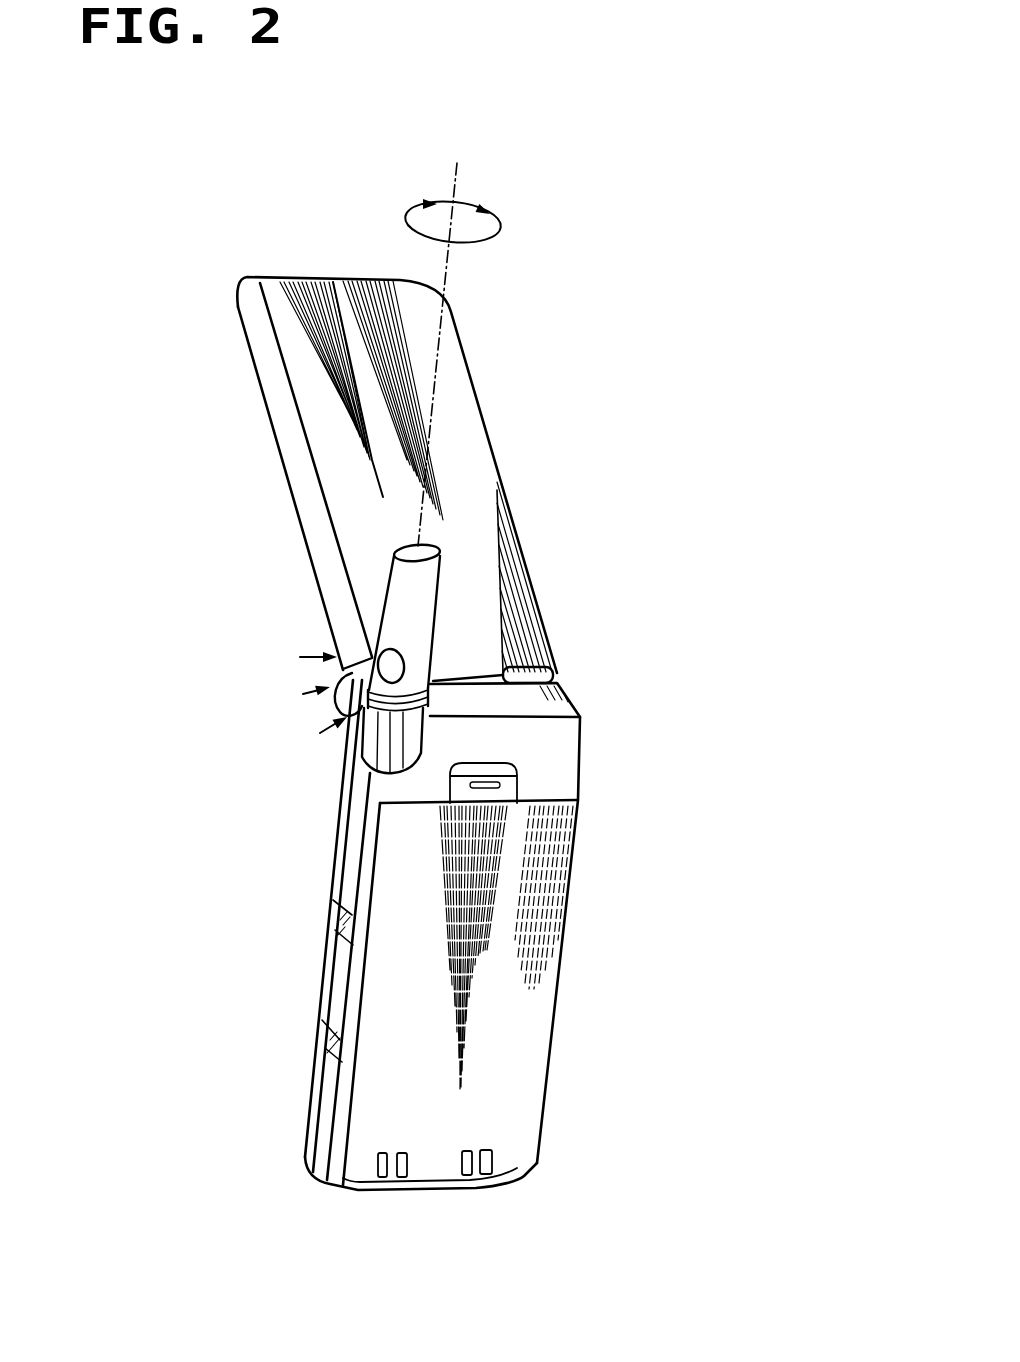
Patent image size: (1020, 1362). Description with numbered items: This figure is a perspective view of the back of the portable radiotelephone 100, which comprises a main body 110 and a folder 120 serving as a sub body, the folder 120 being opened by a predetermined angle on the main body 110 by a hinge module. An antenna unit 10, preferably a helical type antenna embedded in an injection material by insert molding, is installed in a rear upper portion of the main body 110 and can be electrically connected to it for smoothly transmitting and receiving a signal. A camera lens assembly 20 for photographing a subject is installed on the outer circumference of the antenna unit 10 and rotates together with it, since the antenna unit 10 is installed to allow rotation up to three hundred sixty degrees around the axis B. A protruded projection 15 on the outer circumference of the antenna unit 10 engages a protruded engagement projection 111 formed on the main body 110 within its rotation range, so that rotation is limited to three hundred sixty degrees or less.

The portable radiotelephone 100 is at (433, 655).
The main body 110 is at (513, 1080).
The folder 120 is at (487, 578).
The antenna unit 10 is at (373, 607).
The camera lens assembly 20 is at (365, 640).
The projection 15 is at (437, 697).
The engagement projection 111 is at (417, 733).
The axis B is at (453, 333).